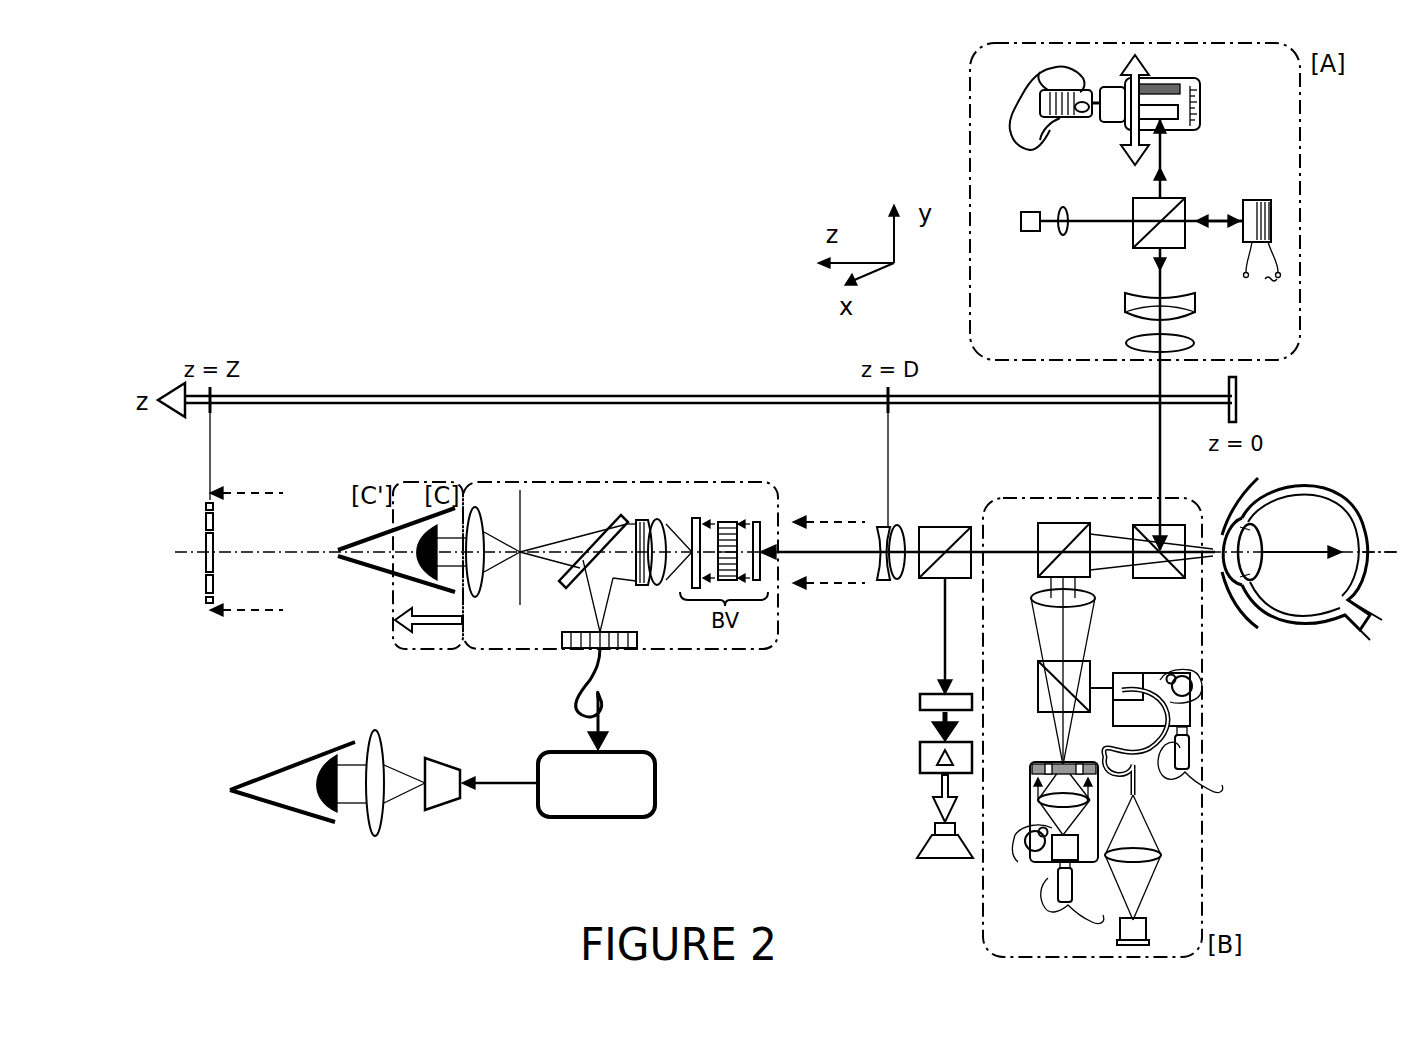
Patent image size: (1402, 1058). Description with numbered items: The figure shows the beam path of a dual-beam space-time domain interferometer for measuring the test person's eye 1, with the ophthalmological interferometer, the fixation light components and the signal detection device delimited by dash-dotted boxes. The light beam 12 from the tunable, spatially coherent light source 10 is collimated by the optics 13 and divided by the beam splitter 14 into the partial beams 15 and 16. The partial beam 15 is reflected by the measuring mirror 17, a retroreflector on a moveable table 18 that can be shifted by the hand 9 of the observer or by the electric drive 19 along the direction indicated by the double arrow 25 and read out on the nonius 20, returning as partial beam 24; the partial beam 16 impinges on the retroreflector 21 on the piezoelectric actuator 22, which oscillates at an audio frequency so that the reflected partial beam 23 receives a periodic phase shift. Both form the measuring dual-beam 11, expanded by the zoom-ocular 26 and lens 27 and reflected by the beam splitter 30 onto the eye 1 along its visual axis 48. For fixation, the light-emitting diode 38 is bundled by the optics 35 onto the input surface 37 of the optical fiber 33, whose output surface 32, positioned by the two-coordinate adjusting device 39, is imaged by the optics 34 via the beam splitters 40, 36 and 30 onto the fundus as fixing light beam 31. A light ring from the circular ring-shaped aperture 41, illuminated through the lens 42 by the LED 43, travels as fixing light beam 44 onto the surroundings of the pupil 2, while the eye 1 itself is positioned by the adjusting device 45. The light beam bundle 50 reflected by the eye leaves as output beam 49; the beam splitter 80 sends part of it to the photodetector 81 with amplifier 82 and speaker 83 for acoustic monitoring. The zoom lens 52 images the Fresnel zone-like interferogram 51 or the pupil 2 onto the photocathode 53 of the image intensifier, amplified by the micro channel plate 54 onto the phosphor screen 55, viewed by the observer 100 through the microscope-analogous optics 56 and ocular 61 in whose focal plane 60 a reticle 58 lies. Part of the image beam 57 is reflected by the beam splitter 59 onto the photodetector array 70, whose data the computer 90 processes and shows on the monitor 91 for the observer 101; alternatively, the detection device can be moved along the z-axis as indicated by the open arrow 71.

The eye 1 is at (1302, 559).
The pupil 2 is at (1226, 540).
The hand of the observer 9 is at (1176, 153).
The light source 10 is at (1029, 213).
The measuring dual-beam 11 is at (1156, 268).
The light beam 12 is at (1110, 230).
The optics 13 is at (1063, 208).
The beam splitter 14 is at (1133, 205).
The partial beam 15 is at (1157, 160).
The partial beam 16 is at (1232, 215).
The measuring mirror 17 is at (1148, 110).
The moveable table 18 is at (1182, 124).
The electric drive 19 is at (1113, 88).
The nonius 20 is at (1192, 95).
The retroreflector 21 is at (1251, 200).
The piezoelectric actuator 22 is at (1266, 200).
The reflected partial beam 23 is at (1203, 230).
The partial beam 24 is at (1166, 175).
The displacement direction 25 is at (1120, 156).
The zoom-ocular 26 is at (1196, 305).
The lens 27 is at (1195, 343).
The beam splitter 30 is at (1143, 525).
The fixing light beam 31 is at (1073, 613).
The output surface 32 is at (1125, 673).
The optical fiber 33 is at (1136, 790).
The optics 34 is at (1033, 602).
The optics 35 is at (1161, 857).
The beam splitter 36 is at (1078, 523).
The input surface 37 is at (1140, 812).
The light-emitting diode 38 is at (1143, 925).
The 2-coordinate adjusting device 39 is at (1153, 673).
The beam splitter 40 is at (1045, 692).
The circular ring-shaped aperture 41 is at (1080, 768).
The lens 42 is at (1050, 832).
The LED 43 is at (1060, 845).
The fixing light beam 44 is at (1040, 652).
The 2-coordinate adjusting device 45 is at (1030, 812).
The visual axis 48 is at (1380, 556).
The output beam 49 is at (1007, 552).
The light beam bundle 50 is at (855, 522).
The Fresnel zone-like space-time domain interferogram 51 is at (207, 512).
The zoom lens 52 is at (898, 527).
The photocathode 53 is at (757, 522).
The micro channel plate 54 is at (727, 522).
The phosphor screen 55 is at (695, 518).
The microscope-analogous optics 56 is at (646, 521).
The image beam 57 is at (624, 518).
The reticle 58 is at (664, 521).
The beam splitter 59 is at (595, 550).
The focal plane 60 is at (519, 500).
The ocular 61 is at (475, 508).
The photodetector array 70 is at (612, 648).
The open arrow 71 is at (428, 632).
The beam splitter 80 is at (935, 585).
The photodetector 81 is at (925, 704).
The amplifier 82 is at (930, 767).
The speaker 83 is at (944, 829).
The computer 90 is at (657, 817).
The monitor 91 is at (448, 803).
The observer 100 is at (345, 603).
The observer 101 is at (350, 743).